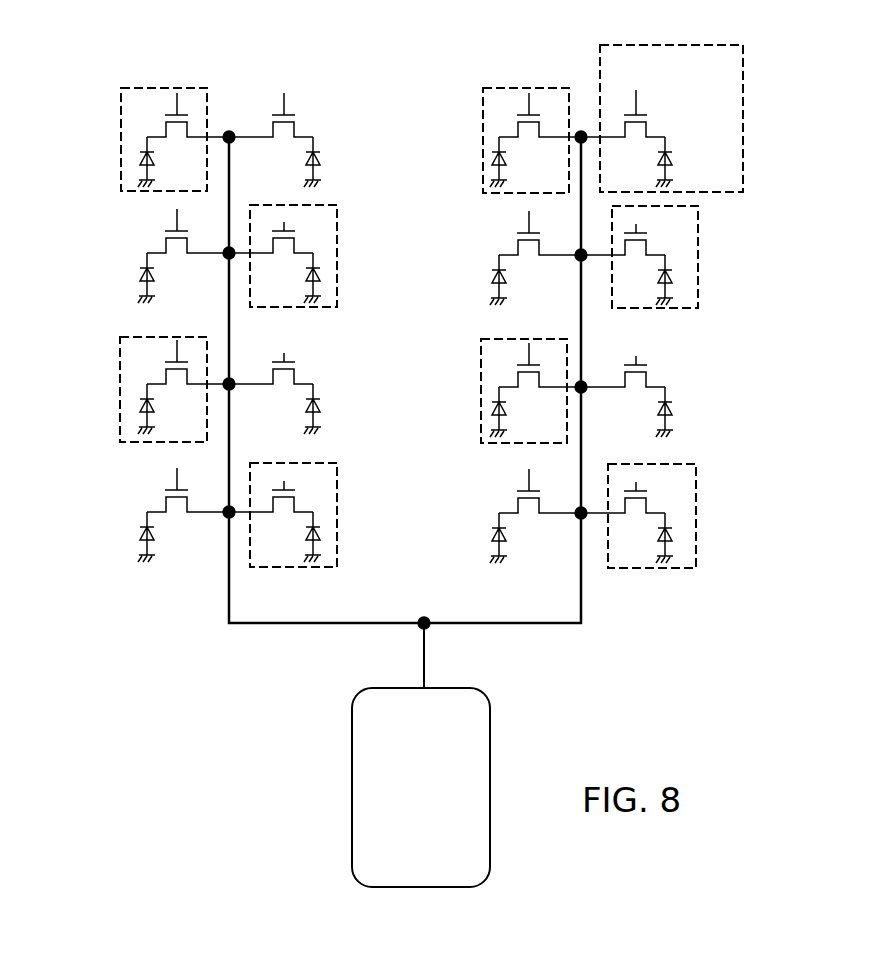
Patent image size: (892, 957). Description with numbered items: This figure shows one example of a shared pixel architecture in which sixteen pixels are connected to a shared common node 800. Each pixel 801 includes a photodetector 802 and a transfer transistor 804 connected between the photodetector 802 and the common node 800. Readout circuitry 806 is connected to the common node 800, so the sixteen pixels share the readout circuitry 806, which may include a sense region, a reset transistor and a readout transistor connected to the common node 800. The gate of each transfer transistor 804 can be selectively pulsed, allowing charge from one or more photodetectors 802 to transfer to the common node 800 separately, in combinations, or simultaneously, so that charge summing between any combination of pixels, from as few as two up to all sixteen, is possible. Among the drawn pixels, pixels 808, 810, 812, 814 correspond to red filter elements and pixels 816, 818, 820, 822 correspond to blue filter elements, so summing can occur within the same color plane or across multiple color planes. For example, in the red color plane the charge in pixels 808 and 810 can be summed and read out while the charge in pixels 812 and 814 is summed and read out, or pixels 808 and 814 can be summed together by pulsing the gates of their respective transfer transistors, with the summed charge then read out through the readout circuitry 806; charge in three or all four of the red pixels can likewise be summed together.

The common node 800 is at (426, 626).
The pixel 801 is at (692, 118).
The photodetector 802 is at (672, 160).
The transfer transistor 804 is at (638, 104).
The readout circuitry 806 is at (404, 798).
The pixel 808 is at (121, 100).
The pixel 810 is at (483, 113).
The pixel 812 is at (120, 362).
The pixel 814 is at (481, 364).
The pixel 816 is at (337, 227).
The pixel 818 is at (698, 226).
The pixel 820 is at (337, 483).
The pixel 822 is at (696, 486).